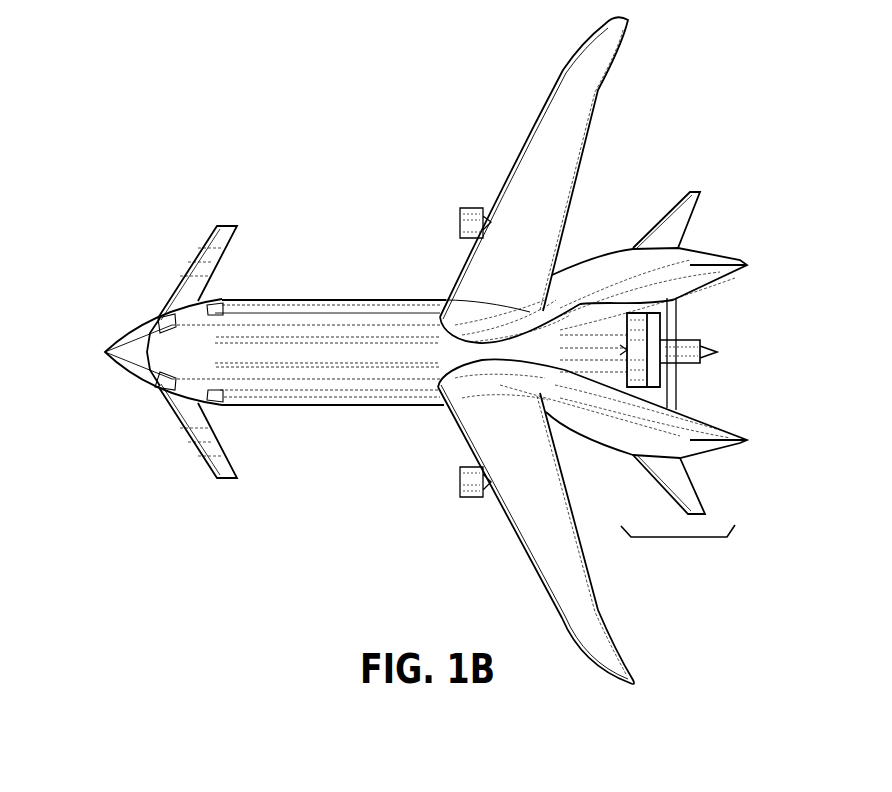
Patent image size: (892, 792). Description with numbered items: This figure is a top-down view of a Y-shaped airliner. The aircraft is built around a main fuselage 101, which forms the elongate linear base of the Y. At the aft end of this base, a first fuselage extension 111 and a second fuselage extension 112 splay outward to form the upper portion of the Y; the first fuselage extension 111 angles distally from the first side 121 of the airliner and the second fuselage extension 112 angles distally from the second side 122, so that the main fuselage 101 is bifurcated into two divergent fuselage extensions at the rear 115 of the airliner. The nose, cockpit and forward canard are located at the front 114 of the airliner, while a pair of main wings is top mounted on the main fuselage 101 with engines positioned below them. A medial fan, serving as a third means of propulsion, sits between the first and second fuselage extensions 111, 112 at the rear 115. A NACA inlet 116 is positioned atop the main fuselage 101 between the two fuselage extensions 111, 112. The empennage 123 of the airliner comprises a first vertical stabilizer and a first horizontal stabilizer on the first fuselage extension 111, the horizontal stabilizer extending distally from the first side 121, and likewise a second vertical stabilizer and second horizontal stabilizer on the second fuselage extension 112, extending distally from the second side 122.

The main fuselage 101 is at (300, 333).
The first fuselage extension 111 is at (667, 430).
The second fuselage extension 112 is at (657, 270).
The front 114 is at (106, 352).
The rear 115 is at (675, 299).
The NACA inlet 116 is at (582, 348).
The first side 121 is at (360, 407).
The second side 122 is at (367, 300).
The empennage 123 is at (672, 537).